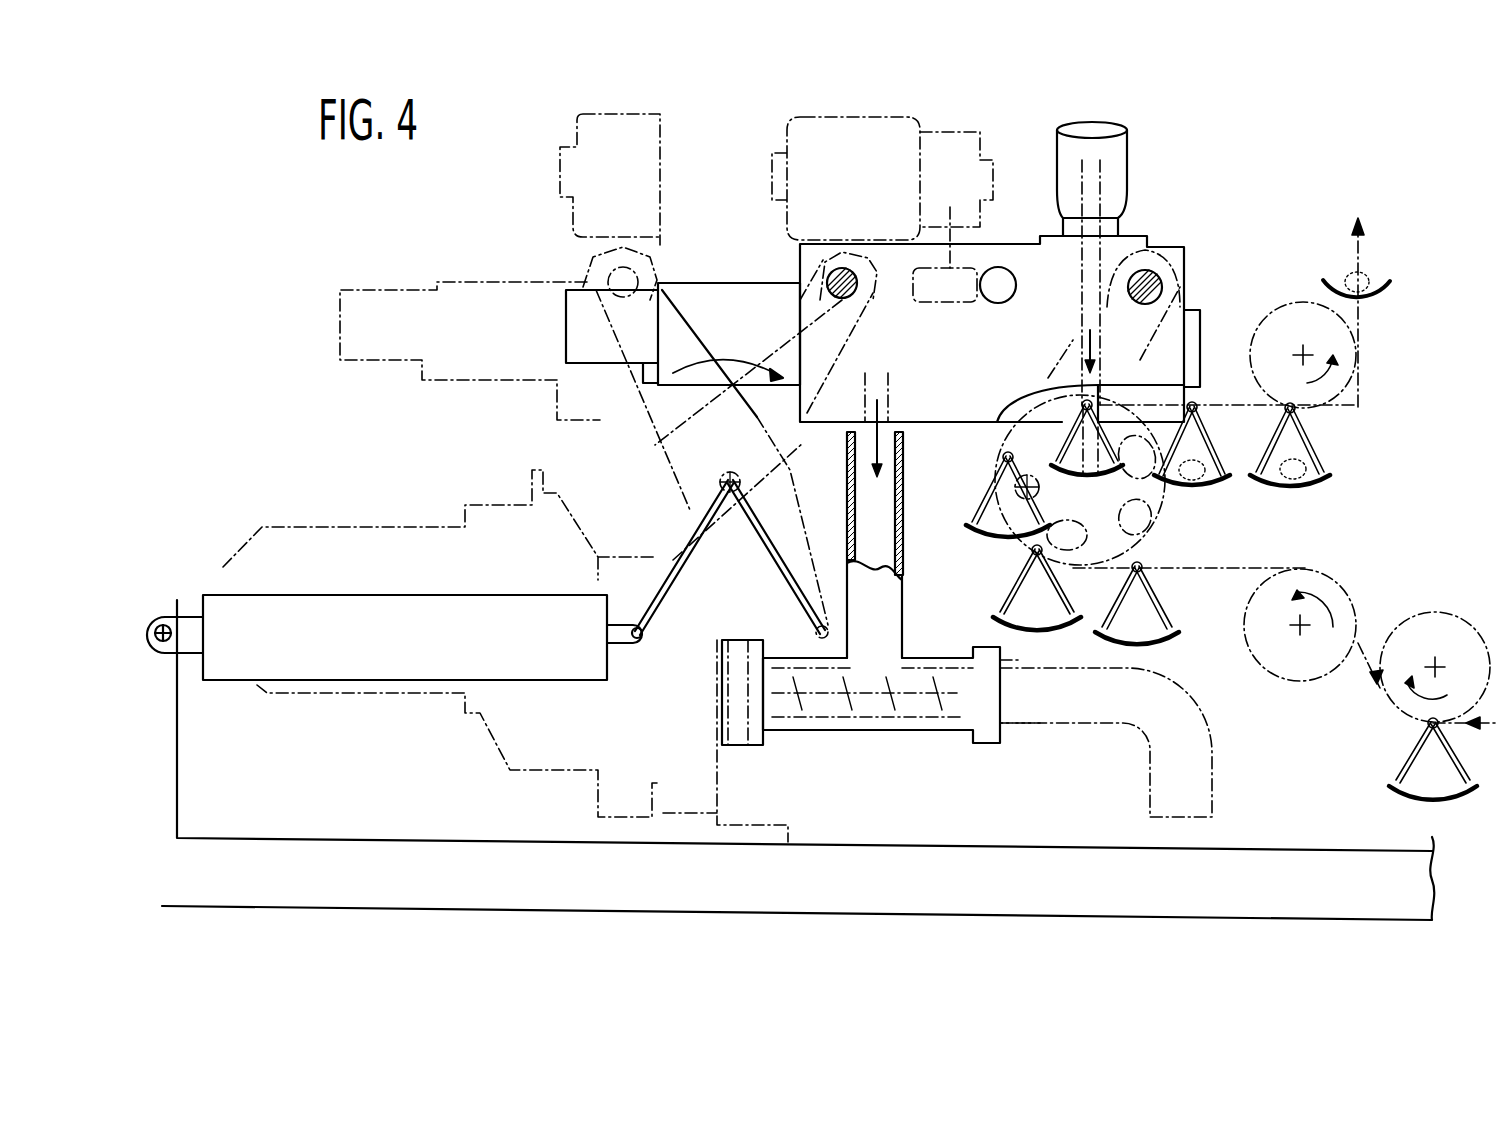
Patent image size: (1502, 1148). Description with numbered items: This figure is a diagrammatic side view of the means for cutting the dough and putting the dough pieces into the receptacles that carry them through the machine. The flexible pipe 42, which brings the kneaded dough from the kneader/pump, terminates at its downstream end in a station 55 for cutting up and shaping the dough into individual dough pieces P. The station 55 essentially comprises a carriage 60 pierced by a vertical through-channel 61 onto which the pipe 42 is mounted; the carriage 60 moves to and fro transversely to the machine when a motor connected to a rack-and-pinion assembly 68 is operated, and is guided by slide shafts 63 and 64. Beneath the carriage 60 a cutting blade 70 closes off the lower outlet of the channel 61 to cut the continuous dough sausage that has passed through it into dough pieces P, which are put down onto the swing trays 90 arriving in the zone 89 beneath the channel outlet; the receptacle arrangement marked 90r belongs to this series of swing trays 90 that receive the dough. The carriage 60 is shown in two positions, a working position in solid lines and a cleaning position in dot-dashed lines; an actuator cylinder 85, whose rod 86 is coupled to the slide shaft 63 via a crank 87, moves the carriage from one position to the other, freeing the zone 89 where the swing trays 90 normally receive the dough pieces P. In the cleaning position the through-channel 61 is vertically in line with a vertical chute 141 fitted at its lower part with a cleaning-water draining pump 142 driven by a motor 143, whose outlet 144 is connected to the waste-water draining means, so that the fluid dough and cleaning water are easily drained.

The flexible pipe 42 is at (1115, 142).
The station for cutting up and shaping the dough 55 is at (1022, 217).
The carriage 60 is at (1118, 250).
The through-channel 61 is at (1085, 283).
The slide shaft 63 is at (853, 292).
The slide shaft 64 is at (1162, 282).
The rack-and-pinion assembly element 68 is at (998, 303).
The cutting blade 70 is at (977, 430).
The actuator cylinder 85 is at (388, 600).
The rod 86 is at (620, 645).
The crank 87 is at (793, 440).
The zone 89 is at (993, 553).
The swing tray 90 is at (1320, 478).
The bucket wheel 90r is at (1127, 490).
The vertical chute 141 is at (893, 530).
The cleaning-water draining pump 142 is at (893, 702).
The motor 143 is at (738, 735).
The outlet 144 is at (1213, 796).
The dough piece P is at (1373, 277).